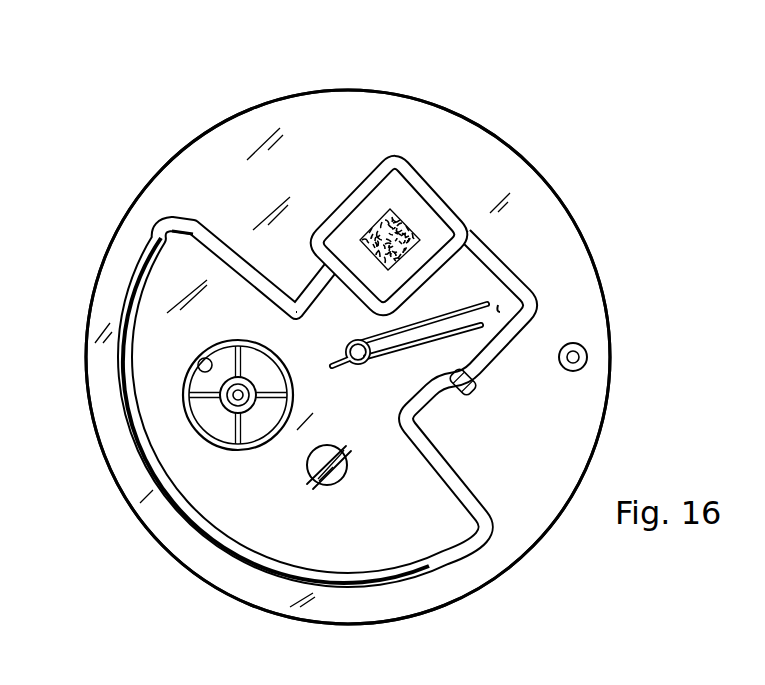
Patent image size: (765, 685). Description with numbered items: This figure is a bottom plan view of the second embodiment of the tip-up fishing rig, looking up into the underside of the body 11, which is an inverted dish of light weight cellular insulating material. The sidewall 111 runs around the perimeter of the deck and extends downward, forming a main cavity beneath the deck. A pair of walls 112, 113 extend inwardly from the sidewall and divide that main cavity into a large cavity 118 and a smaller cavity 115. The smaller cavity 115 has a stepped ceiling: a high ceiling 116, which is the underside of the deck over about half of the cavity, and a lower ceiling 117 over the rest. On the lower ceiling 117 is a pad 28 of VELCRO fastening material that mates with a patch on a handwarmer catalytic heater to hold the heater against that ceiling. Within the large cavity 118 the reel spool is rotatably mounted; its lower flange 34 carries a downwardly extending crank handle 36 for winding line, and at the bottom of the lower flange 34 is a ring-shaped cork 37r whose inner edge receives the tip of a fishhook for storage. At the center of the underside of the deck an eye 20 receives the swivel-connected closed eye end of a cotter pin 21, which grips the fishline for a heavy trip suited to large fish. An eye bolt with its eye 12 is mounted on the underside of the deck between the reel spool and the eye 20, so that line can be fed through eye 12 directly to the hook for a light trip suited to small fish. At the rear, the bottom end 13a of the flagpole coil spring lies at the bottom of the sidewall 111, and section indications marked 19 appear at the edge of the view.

The body 11 is at (272, 86).
The sidewall 111 is at (358, 90).
The lower ceiling 117 is at (437, 217).
The smaller cavity 115 is at (470, 277).
The high ceiling 116 is at (532, 306).
The bottom end of coil spring 13a is at (587, 351).
The pad of VELCRO fastening material 28 is at (378, 220).
The wall 112 is at (318, 296).
The cotter pin 21 is at (410, 338).
The eye 20 is at (333, 367).
The wall 113 is at (473, 394).
The crank handle 36 is at (203, 362).
The ring-shaped cork 37r is at (220, 407).
The lower flange 34 is at (217, 421).
The large cavity 118 is at (250, 528).
The eye of eye bolt 12 is at (312, 483).
The section line 19- 19 is at (130, 125).